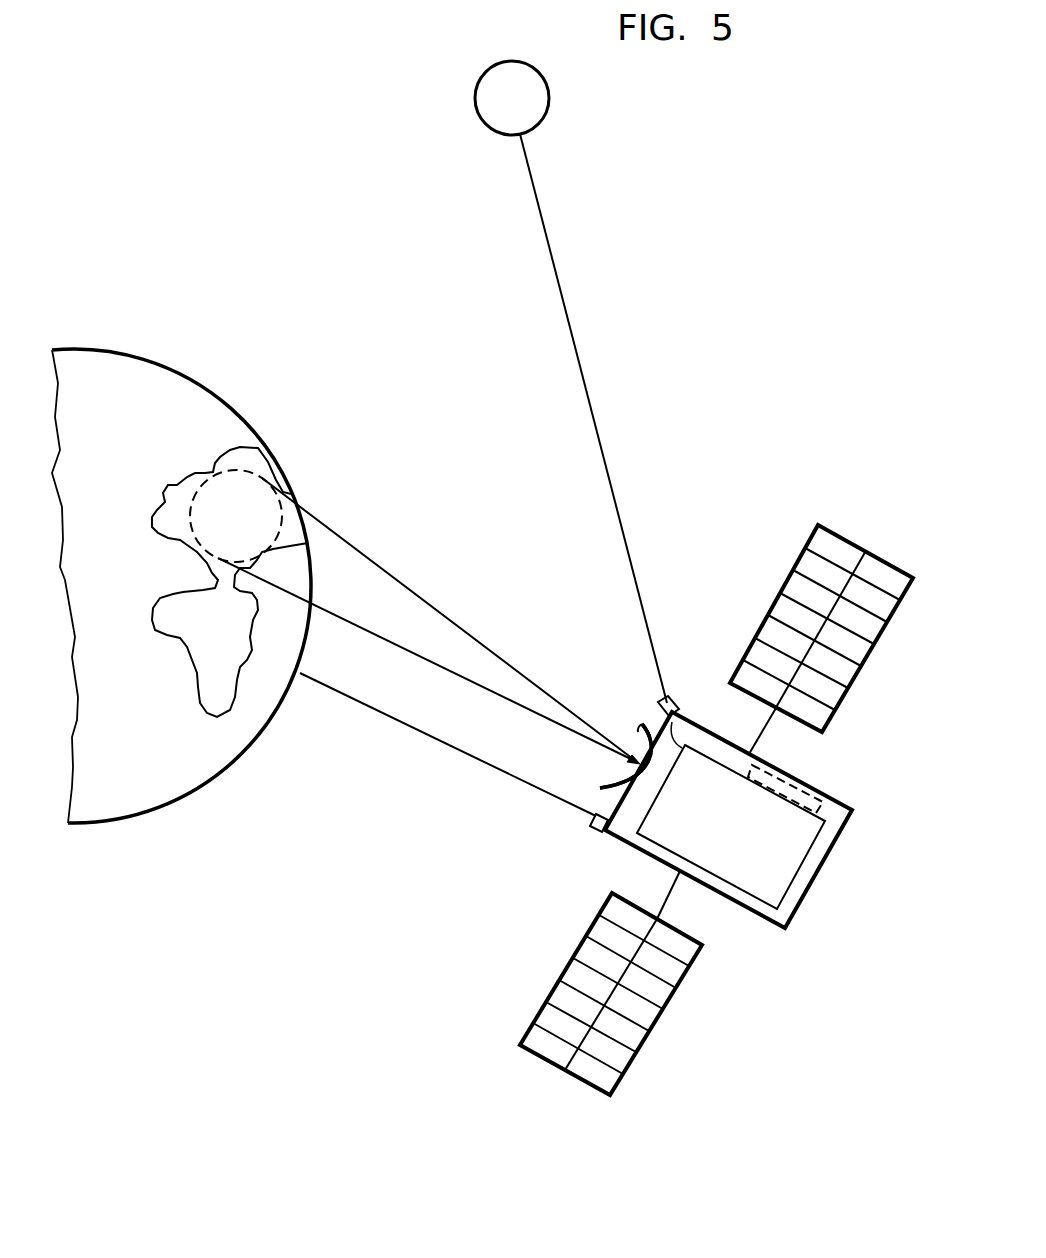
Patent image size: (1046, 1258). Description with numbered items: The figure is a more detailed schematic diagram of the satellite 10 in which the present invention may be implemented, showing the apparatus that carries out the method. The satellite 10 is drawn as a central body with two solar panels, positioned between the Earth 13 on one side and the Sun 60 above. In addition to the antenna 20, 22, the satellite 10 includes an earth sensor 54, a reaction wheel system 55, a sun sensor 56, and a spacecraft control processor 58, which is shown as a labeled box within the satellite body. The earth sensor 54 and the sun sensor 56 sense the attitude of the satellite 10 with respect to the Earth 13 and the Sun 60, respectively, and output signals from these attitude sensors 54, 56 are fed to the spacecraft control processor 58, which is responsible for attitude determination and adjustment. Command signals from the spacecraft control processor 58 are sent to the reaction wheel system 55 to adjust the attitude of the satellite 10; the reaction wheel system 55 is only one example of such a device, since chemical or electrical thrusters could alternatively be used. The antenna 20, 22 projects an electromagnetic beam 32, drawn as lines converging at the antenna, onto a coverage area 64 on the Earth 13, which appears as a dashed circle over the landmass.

The satellite 10 is at (716, 810).
The Earth 13 is at (233, 412).
The antenna 20 is at (640, 728).
The antenna 22 is at (625, 756).
The electromagnetic beam 32 is at (378, 571).
The earth sensor 54 is at (593, 826).
The reaction wheel system 55 is at (795, 782).
The sun sensor 56 is at (674, 700).
The spacecraft control processor 58 is at (762, 908).
The Sun 60 is at (478, 122).
The coverage area 64 is at (263, 478).